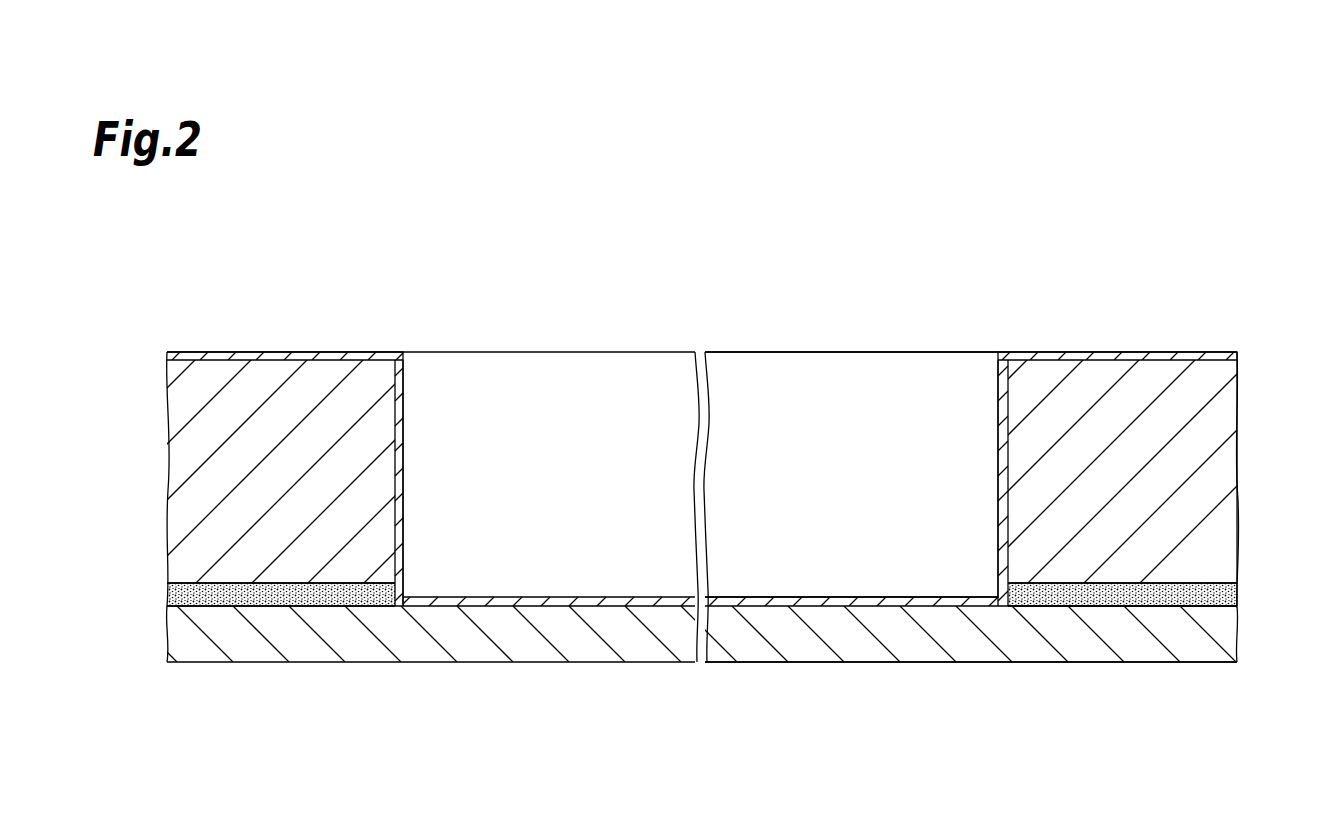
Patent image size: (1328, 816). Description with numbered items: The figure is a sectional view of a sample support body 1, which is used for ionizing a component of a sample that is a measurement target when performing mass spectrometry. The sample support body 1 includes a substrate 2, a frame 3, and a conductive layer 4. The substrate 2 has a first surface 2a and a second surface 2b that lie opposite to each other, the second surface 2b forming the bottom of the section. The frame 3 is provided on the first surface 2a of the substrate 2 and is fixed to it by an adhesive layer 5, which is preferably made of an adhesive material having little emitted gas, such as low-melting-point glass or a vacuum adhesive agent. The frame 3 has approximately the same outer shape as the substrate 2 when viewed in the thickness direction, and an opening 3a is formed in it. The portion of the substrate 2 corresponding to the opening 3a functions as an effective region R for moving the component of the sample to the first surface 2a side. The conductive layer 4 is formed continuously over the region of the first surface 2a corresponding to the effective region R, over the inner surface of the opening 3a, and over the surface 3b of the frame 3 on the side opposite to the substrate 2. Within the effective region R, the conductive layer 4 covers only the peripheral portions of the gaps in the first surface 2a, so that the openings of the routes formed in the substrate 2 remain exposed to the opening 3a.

The sample support body 1 is at (1027, 262).
The substrate 2 is at (1228, 632).
The first surface 2a is at (1237, 586).
The second surface 2b is at (1210, 664).
The frame 3 is at (1227, 470).
The opening 3a is at (405, 417).
The surface of the frame 3b is at (1208, 352).
The conductive layer 4 is at (550, 596).
The adhesive layer 5 is at (167, 594).
The effective region R is at (766, 596).